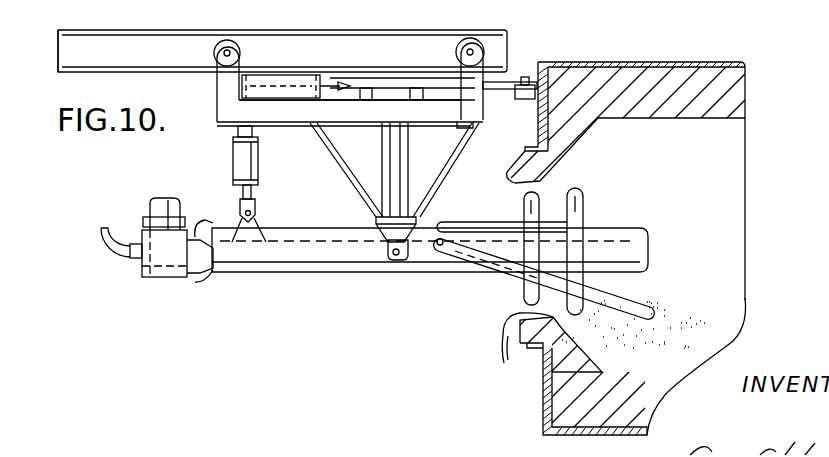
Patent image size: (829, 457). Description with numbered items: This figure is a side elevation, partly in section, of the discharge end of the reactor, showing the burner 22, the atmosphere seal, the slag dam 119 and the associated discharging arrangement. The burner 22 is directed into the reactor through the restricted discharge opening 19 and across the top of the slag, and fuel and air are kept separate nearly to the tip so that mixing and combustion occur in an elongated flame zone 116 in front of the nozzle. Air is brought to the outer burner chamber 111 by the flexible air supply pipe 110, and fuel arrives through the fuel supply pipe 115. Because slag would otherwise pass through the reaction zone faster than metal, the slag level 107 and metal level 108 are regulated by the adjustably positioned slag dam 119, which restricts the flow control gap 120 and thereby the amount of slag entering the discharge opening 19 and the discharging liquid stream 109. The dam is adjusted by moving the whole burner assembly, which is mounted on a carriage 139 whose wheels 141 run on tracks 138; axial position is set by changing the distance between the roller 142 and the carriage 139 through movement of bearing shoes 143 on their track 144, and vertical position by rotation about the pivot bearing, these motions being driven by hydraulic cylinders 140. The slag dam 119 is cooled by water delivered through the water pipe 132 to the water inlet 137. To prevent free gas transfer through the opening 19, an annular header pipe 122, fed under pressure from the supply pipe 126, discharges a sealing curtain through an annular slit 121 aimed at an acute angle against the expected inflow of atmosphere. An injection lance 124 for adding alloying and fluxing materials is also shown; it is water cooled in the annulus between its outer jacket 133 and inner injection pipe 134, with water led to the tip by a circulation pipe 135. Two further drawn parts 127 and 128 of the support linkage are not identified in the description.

The tracks 138 is at (250, 48).
The wheels 141 is at (214, 53).
The carriage 139 is at (220, 114).
The hydraulic cylinders 140 is at (278, 140).
The bearing shoes 143 is at (365, 90).
The track 144 is at (397, 92).
The roller 142 is at (521, 91).
The elongated flame zone 116 is at (730, 237).
The metal level 108 is at (722, 313).
The slag level 107 is at (693, 308).
The flow control gap 120 is at (543, 349).
The discharge opening 19 is at (520, 314).
The discharging liquid stream 109 is at (505, 338).
The burner 22 is at (633, 223).
The annular slit 121 is at (527, 197).
The annular header pipe 122 is at (540, 182).
The supply pipe 126 is at (476, 220).
The slag dam 119 is at (592, 296).
The injection lance 124 is at (498, 267).
The water pipe 132 is at (439, 245).
The support frame 127 is at (384, 162).
The bracket 128 is at (387, 250).
The flexible air supply pipe 110 is at (150, 208).
The outer burner chamber 111 is at (155, 271).
The fuel supply pipe 115 is at (108, 259).
The water inlet 137 is at (197, 281).
The circulation pipe 135 is at (666, 9).
The outer jacket 133 is at (711, 17).
The inner injection pipe 134 is at (807, 13).